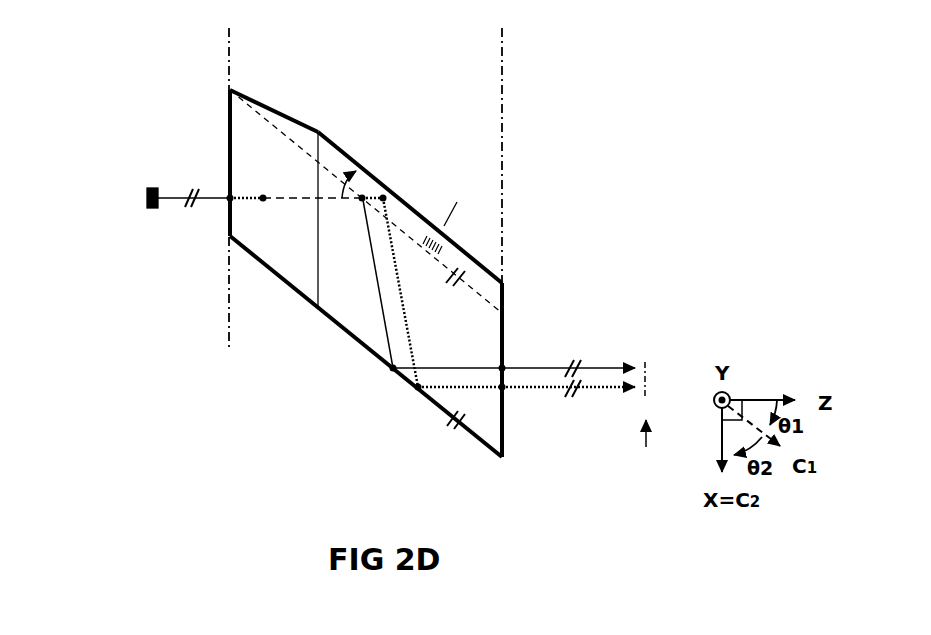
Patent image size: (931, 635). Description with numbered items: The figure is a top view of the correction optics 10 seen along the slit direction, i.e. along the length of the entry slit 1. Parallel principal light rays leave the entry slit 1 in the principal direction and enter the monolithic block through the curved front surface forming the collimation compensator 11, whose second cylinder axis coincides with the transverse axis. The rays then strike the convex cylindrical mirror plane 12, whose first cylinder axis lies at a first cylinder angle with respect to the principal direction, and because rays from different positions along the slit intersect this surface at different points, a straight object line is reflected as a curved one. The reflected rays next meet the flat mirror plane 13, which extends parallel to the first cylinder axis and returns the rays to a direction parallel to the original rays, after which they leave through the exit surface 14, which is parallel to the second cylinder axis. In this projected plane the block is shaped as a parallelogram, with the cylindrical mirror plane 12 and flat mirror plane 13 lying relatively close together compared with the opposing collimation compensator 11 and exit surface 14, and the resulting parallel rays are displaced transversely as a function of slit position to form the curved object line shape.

The entry slit 1 is at (153, 230).
The correction optics 10 is at (562, 120).
The collimation compensator 11 is at (214, 153).
The cylindrical mirror plane 12 is at (406, 174).
The flat mirror plane 13 is at (397, 394).
The exit surface 14 is at (522, 342).